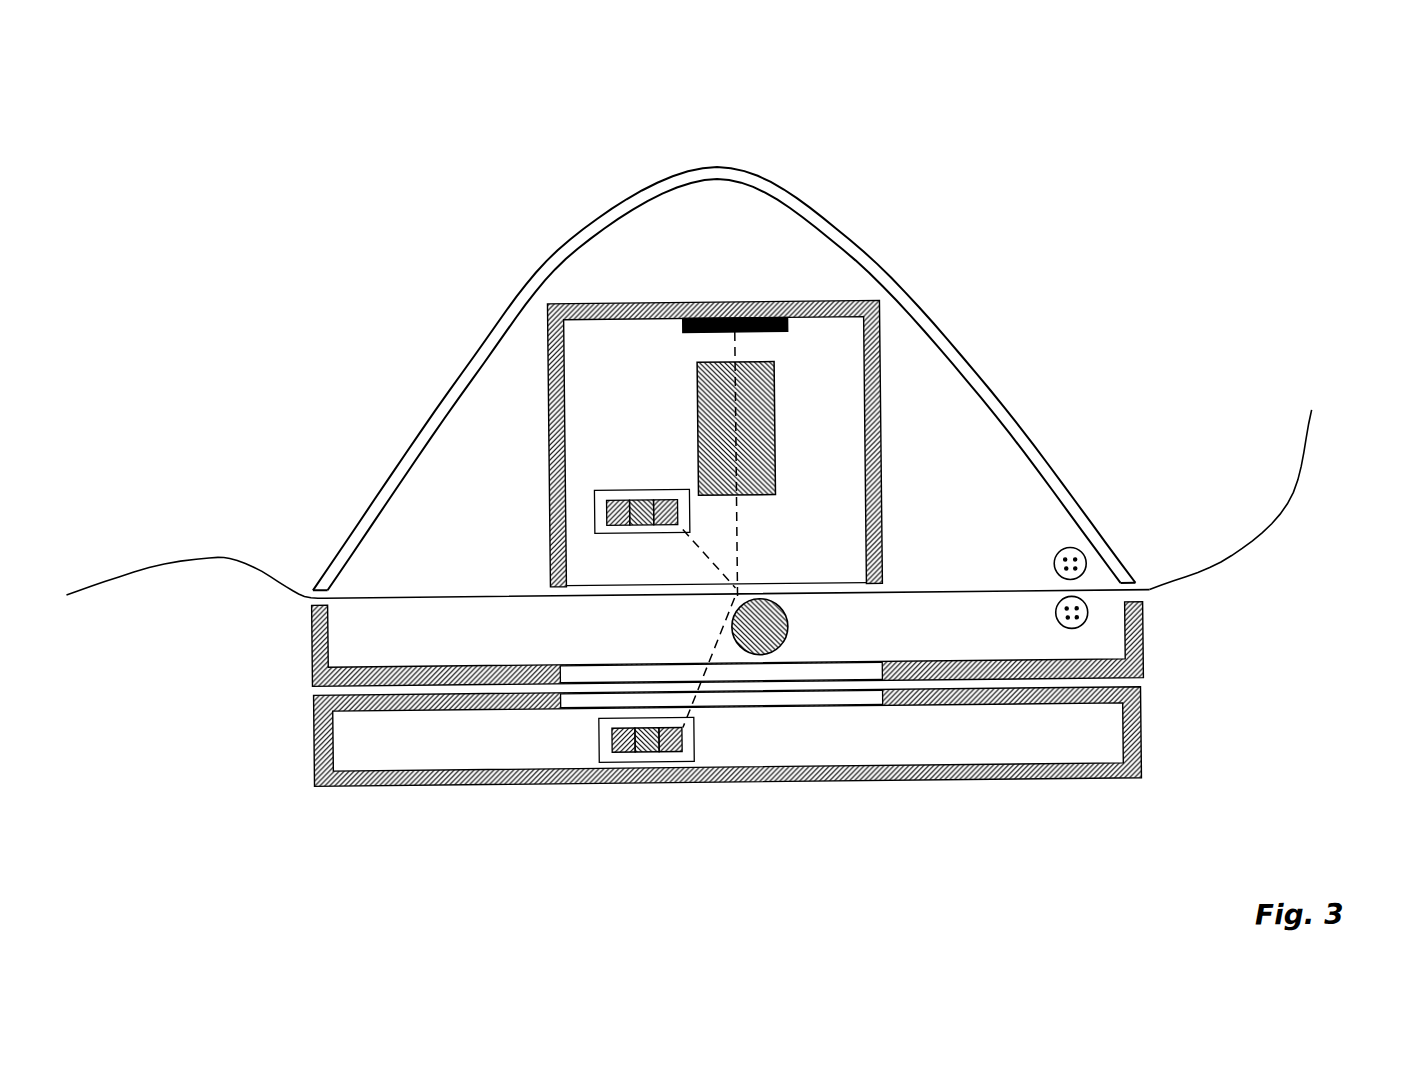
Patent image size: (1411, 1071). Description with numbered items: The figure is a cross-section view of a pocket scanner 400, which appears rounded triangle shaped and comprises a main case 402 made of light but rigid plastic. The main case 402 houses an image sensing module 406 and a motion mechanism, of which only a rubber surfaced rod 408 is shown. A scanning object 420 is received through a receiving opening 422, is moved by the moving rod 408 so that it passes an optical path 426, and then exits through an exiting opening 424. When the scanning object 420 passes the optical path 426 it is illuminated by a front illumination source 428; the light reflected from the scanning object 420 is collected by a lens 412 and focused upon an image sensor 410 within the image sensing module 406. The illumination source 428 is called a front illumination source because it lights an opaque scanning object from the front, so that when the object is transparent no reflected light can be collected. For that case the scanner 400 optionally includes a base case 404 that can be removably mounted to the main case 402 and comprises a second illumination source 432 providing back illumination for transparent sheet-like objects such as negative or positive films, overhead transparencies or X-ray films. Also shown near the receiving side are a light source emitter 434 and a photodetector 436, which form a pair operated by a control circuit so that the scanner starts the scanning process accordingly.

The pocket scanner 400 is at (849, 174).
The main case 402 is at (465, 370).
The base case 404 is at (336, 746).
The image sensing module 406 is at (845, 333).
The rubber surfaced rod 408 is at (792, 623).
The image sensor 410 is at (674, 302).
The lens 412 is at (700, 400).
The scanning object 420 is at (1264, 533).
The receiving opening 422 is at (1141, 587).
The exiting opening 424 is at (302, 584).
The optical path 426 is at (744, 522).
The front illumination source 428 is at (599, 497).
The second illumination source 432 is at (682, 784).
The light source (emitter) 434 is at (1043, 556).
The photodetector 436 is at (1046, 617).